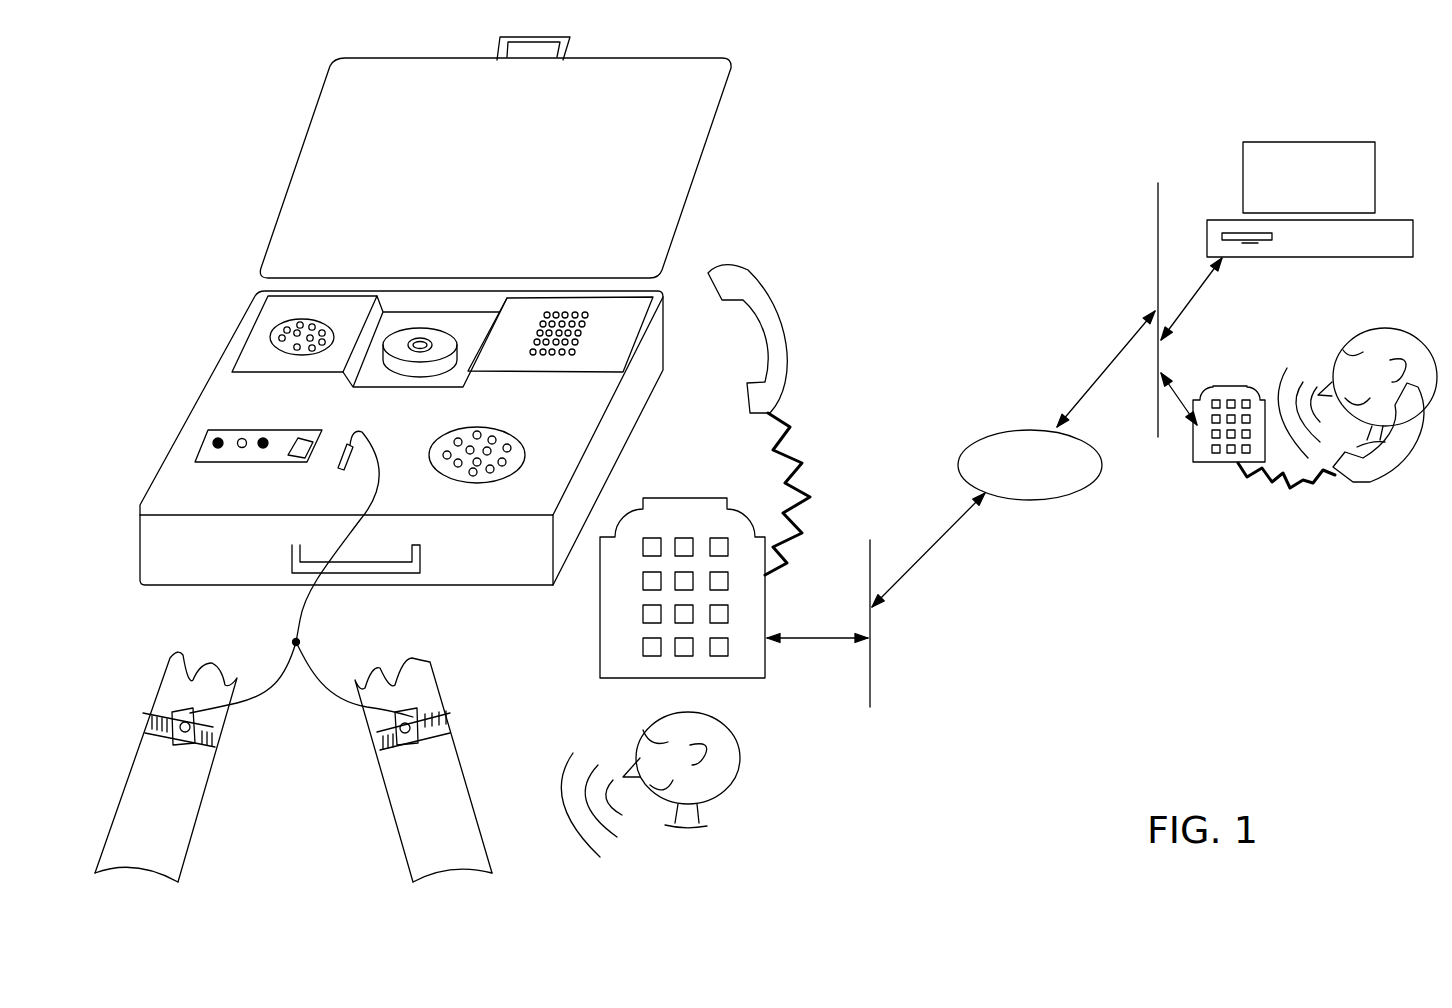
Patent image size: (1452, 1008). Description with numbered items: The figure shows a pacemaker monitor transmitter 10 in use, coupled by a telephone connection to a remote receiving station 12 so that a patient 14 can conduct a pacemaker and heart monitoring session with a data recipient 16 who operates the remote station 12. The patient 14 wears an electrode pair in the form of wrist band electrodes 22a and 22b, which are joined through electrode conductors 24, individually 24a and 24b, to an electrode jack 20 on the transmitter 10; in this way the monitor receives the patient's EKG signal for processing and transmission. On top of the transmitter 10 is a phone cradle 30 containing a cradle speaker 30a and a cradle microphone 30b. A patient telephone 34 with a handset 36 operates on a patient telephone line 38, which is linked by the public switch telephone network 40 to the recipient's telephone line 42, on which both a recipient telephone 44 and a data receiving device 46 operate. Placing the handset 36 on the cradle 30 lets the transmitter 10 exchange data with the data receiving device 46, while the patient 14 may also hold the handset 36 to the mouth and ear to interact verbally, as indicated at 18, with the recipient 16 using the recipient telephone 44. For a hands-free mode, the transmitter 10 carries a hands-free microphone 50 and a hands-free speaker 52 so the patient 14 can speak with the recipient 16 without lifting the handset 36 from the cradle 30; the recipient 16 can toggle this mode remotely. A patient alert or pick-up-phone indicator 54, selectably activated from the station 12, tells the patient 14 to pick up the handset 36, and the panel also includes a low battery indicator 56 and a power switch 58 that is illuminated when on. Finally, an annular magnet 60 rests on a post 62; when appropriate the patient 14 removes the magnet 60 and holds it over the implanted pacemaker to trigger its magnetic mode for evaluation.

The pacemaker monitor transmitter 10 is at (227, 280).
The remote receiving station 12 is at (1218, 197).
The patient 14 is at (740, 763).
The data recipient 16 is at (1385, 328).
The verbal interaction 18 is at (557, 803).
The electrode jack 20 is at (345, 450).
The wrist band electrode 22a is at (217, 740).
The wrist band electrode 22b is at (377, 740).
The electrode conductors 24 is at (300, 642).
The electrode conductor 24a is at (273, 687).
The electrode conductor 24b is at (317, 680).
The phone cradle 30 is at (258, 362).
The cradle speaker 30a is at (570, 342).
The cradle microphone 30b is at (300, 323).
The patient telephone 34 is at (600, 658).
The handset 36 is at (782, 348).
The patient telephone line 38 is at (868, 565).
The public switch telephone network 40 is at (1030, 502).
The recipient's telephone line 42 is at (1153, 267).
The recipient telephone 44 is at (1223, 465).
The data receiving device 46 is at (1388, 218).
The hands-free microphone 50 is at (242, 448).
The hands-free speaker 52 is at (477, 437).
The patient alert indicator 54 is at (218, 438).
The low battery indicator 56 is at (263, 438).
The power switch 58 is at (300, 437).
The annular magnet 60 is at (417, 330).
The post 62 is at (422, 343).